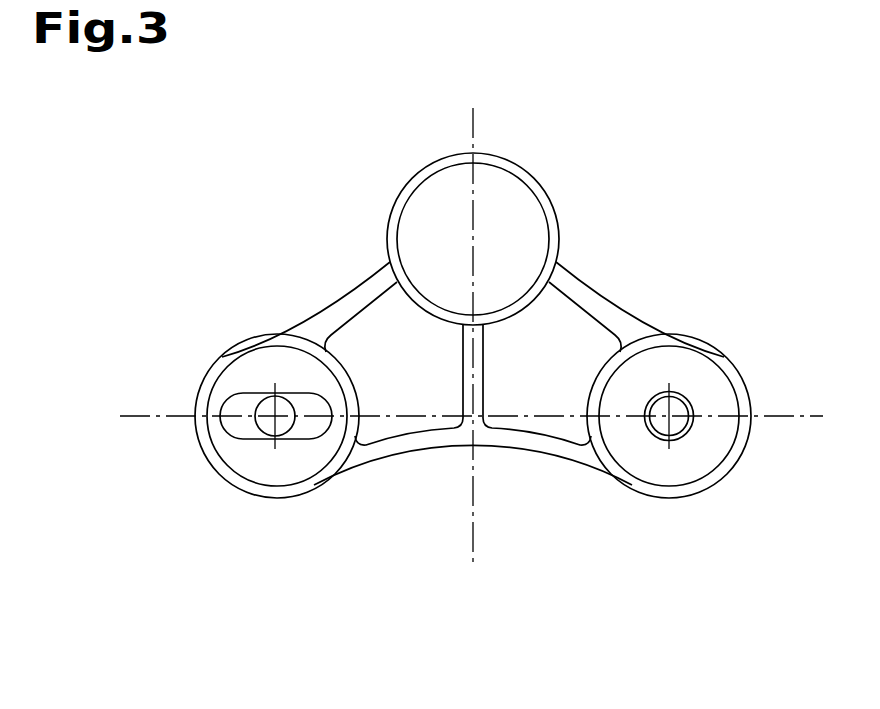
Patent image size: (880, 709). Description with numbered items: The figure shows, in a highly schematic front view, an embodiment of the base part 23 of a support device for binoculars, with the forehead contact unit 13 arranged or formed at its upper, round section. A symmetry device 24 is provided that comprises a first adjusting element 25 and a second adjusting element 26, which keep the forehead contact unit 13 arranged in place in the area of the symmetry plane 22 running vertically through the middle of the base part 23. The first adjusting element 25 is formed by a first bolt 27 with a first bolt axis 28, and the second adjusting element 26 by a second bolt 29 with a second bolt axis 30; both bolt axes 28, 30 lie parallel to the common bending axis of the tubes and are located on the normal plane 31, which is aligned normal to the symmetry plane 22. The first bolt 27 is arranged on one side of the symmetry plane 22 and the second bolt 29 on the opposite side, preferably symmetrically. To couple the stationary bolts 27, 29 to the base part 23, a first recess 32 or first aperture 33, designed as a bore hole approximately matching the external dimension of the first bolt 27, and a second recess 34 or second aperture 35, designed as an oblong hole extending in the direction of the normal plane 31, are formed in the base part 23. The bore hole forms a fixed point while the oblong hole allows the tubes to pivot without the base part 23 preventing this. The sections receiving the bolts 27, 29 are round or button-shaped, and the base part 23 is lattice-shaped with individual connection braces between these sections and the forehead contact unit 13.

The forehead contact unit 13 is at (517, 215).
The symmetry plane 22 is at (473, 538).
The base part 23 is at (610, 268).
The symmetry device 24 is at (247, 205).
The first adjusting element 25 is at (631, 490).
The second adjusting element 26 is at (312, 483).
The first bolt 27 is at (662, 422).
The first bolt axis 28 is at (669, 416).
The second bolt 29 is at (281, 428).
The second bolt axis 30 is at (275, 416).
The normal plane 31 is at (138, 415).
The first recess 32 is at (740, 472).
The first aperture 33 is at (695, 422).
The second recess 34 is at (212, 454).
The second aperture 35 is at (250, 434).